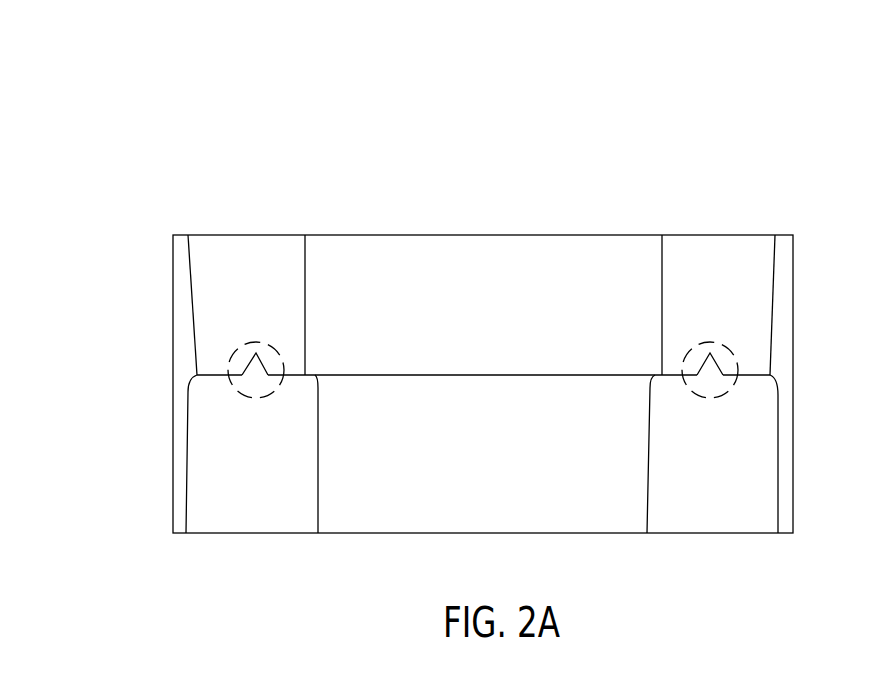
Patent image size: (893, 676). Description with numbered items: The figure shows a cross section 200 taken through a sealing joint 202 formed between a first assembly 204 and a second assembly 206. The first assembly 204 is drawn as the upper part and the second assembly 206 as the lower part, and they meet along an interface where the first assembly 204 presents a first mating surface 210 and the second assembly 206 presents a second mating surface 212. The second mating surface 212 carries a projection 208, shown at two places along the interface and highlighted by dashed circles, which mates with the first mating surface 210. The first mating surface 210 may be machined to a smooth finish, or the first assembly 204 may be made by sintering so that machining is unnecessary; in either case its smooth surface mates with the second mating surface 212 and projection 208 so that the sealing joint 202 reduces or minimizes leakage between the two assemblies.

The cross section 200 is at (70, 95).
The sealing joint 202 is at (783, 369).
The first assembly 204 is at (265, 247).
The second assembly 206 is at (265, 510).
The projection 208 is at (697, 347).
The first mating surface 210 is at (757, 373).
The second mating surface 212 is at (670, 380).